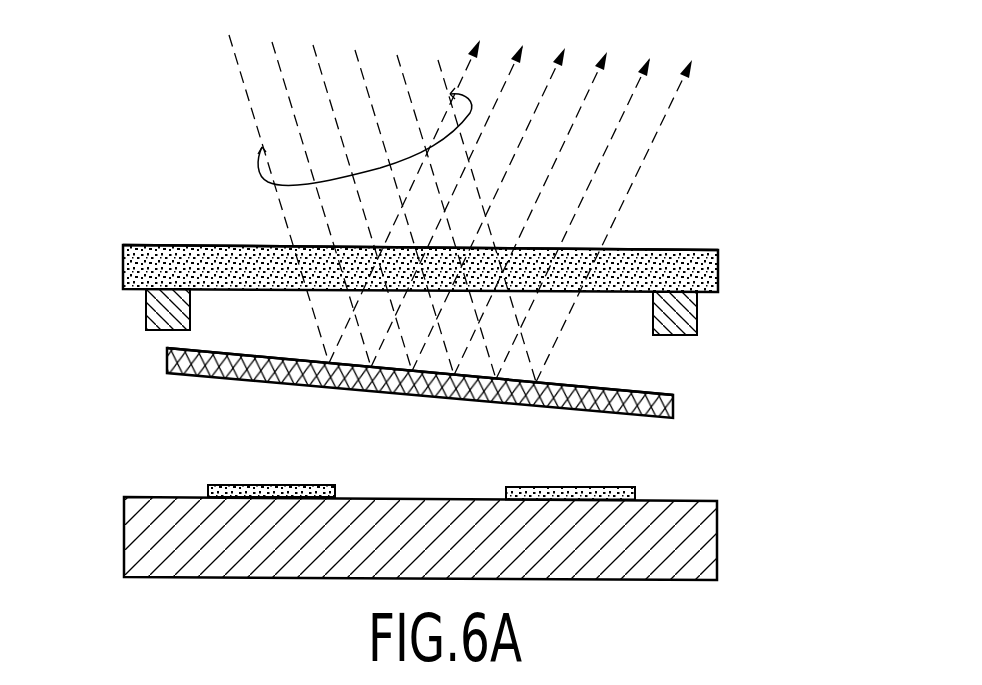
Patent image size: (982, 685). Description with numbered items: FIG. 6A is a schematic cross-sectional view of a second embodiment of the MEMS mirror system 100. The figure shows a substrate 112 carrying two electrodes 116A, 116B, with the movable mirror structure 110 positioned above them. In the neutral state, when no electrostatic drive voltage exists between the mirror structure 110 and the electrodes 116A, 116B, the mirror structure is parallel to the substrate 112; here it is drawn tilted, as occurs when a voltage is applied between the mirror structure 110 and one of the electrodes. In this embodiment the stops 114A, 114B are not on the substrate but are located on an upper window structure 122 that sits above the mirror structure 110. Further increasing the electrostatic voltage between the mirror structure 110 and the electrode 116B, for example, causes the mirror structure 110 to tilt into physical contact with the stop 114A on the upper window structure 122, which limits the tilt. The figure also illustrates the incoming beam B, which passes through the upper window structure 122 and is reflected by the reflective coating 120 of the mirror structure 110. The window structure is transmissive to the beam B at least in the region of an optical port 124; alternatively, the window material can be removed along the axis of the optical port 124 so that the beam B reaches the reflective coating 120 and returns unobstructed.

The MEMS mirror system 100 is at (786, 214).
The incoming beam B is at (256, 158).
The mirror structure 110 is at (486, 363).
The substrate 112 is at (717, 541).
The stop 114A is at (146, 303).
The stop 114B is at (697, 312).
The electrode 116A is at (271, 485).
The electrode 116B is at (609, 487).
The reflective coating 120 is at (237, 354).
The upper window structure 122 is at (471, 238).
The optical port 124 is at (505, 247).